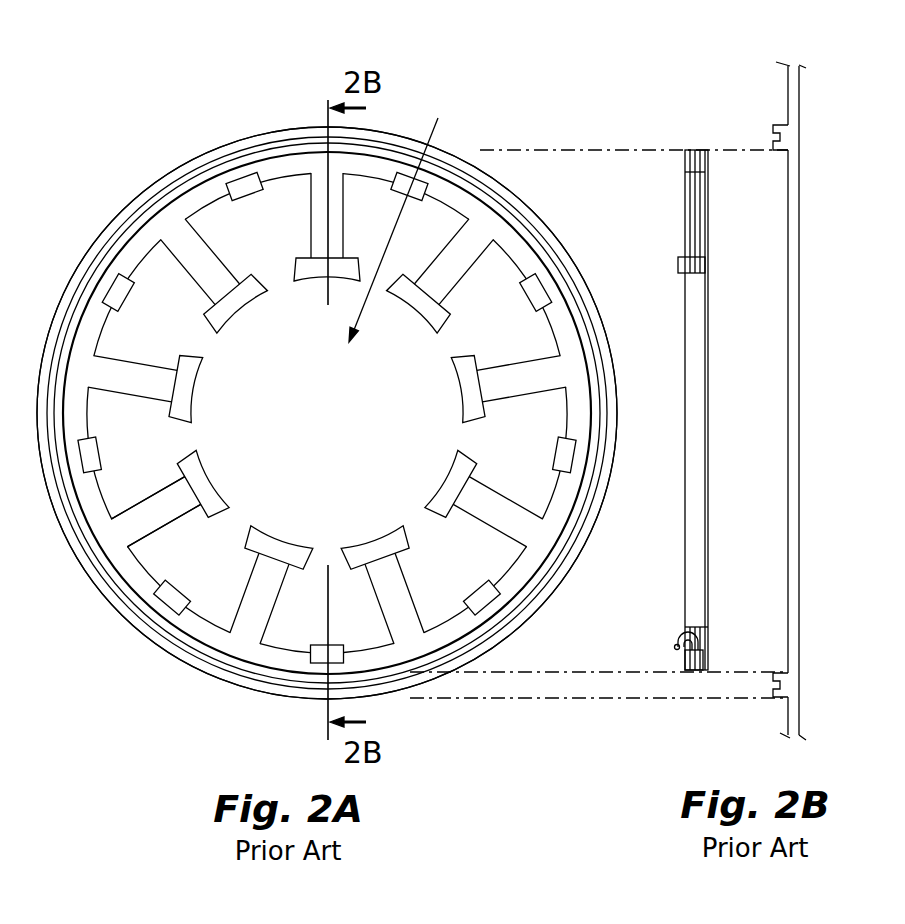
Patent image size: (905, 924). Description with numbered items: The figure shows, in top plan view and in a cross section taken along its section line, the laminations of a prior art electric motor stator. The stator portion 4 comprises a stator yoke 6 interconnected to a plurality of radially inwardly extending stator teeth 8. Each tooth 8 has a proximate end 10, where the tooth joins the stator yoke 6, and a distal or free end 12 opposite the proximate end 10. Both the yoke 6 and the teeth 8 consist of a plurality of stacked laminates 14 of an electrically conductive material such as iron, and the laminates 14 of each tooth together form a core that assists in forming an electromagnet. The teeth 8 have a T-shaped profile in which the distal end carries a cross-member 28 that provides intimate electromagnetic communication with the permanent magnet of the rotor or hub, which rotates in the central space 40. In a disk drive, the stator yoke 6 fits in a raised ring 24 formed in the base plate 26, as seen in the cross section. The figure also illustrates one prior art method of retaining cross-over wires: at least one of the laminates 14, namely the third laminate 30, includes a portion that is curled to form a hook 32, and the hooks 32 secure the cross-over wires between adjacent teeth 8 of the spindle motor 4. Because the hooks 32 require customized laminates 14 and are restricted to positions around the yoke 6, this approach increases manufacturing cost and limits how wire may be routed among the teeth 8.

In FIG. 2A, the stator portion 4 is at (88, 178).
In FIG. 2A, the stator yoke 6 is at (478, 228).
In FIG. 2A, the stator teeth 8 is at (520, 520).
In FIG. 2A, the proximate end 10 is at (122, 528).
In FIG. 2A, the distal end 12 is at (185, 492).
In FIG. 2B, the distal end 12 is at (708, 208).
In FIG. 2B, the laminates 14 is at (690, 150).
In FIG. 2A, the raised ring 24 is at (70, 300).
In FIG. 2B, the raised ring 24 is at (776, 128).
In FIG. 2B, the base plate 26 is at (793, 68).
In FIG. 2A, the cross-member 28 is at (450, 487).
In FIG. 2B, the third laminate 30 is at (688, 275).
In FIG. 2A, the hook 32 is at (242, 178).
In FIG. 2B, the hook 32 is at (678, 640).
In FIG. 2A, the space 40 is at (404, 214).